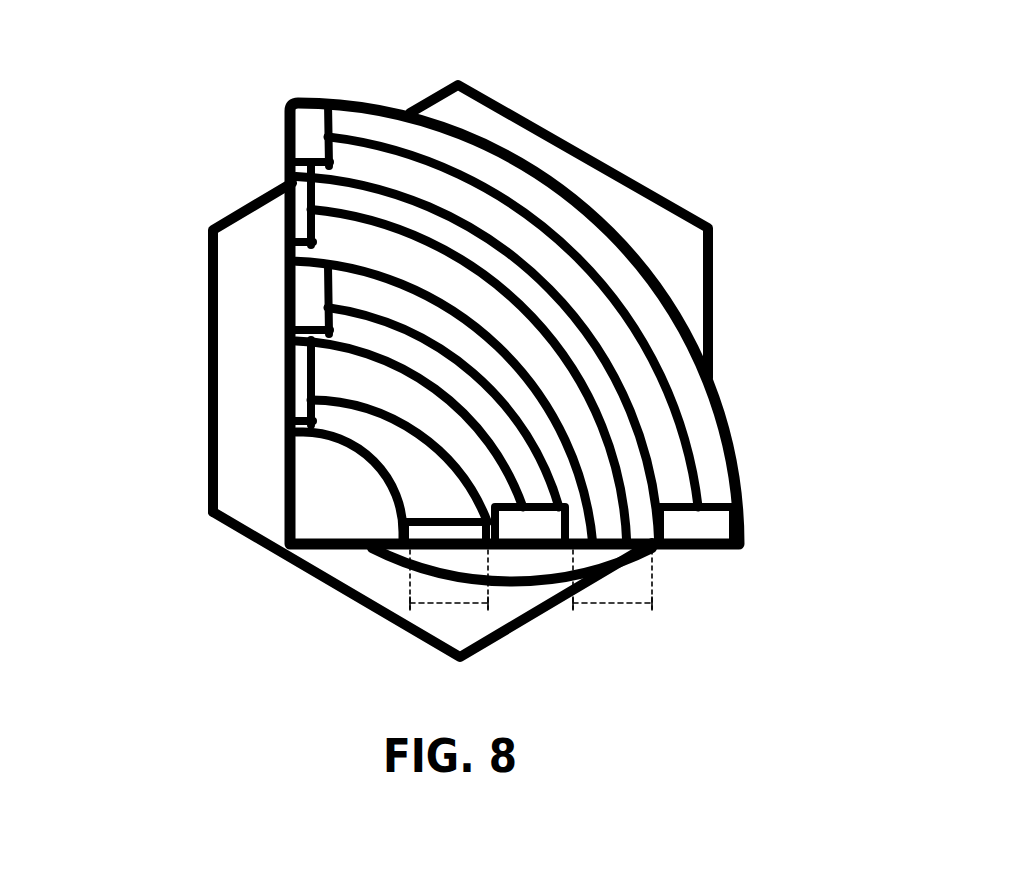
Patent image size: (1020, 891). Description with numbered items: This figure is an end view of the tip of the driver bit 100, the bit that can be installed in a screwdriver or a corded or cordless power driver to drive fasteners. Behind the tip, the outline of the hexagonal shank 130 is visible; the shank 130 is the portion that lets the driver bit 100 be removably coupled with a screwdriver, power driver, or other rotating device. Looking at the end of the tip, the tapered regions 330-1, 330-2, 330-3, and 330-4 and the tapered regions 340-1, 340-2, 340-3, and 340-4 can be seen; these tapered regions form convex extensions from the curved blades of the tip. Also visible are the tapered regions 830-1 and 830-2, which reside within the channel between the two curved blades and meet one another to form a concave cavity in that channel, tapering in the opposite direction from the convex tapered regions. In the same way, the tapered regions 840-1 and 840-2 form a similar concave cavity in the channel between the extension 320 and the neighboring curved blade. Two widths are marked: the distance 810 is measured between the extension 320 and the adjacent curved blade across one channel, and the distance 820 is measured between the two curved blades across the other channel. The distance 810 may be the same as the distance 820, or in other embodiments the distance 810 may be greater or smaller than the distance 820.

The driver bit 100 is at (675, 73).
The shank 130 is at (712, 276).
The extension 320 is at (308, 492).
The tapered region 330-1 is at (347, 115).
The tapered region 330-2 is at (358, 166).
The tapered region 330-3 is at (305, 144).
The tapered region 330-4 is at (716, 521).
The tapered region 830-1 is at (332, 199).
The tapered region 830-2 is at (328, 238).
The tapered region 340-1 is at (352, 293).
The tapered region 340-2 is at (358, 329).
The tapered region 340-3 is at (305, 277).
The tapered region 340-4 is at (547, 523).
The tapered region 840-1 is at (318, 371).
The tapered region 840-2 is at (322, 418).
The distance 810 is at (466, 606).
The distance 820 is at (610, 606).